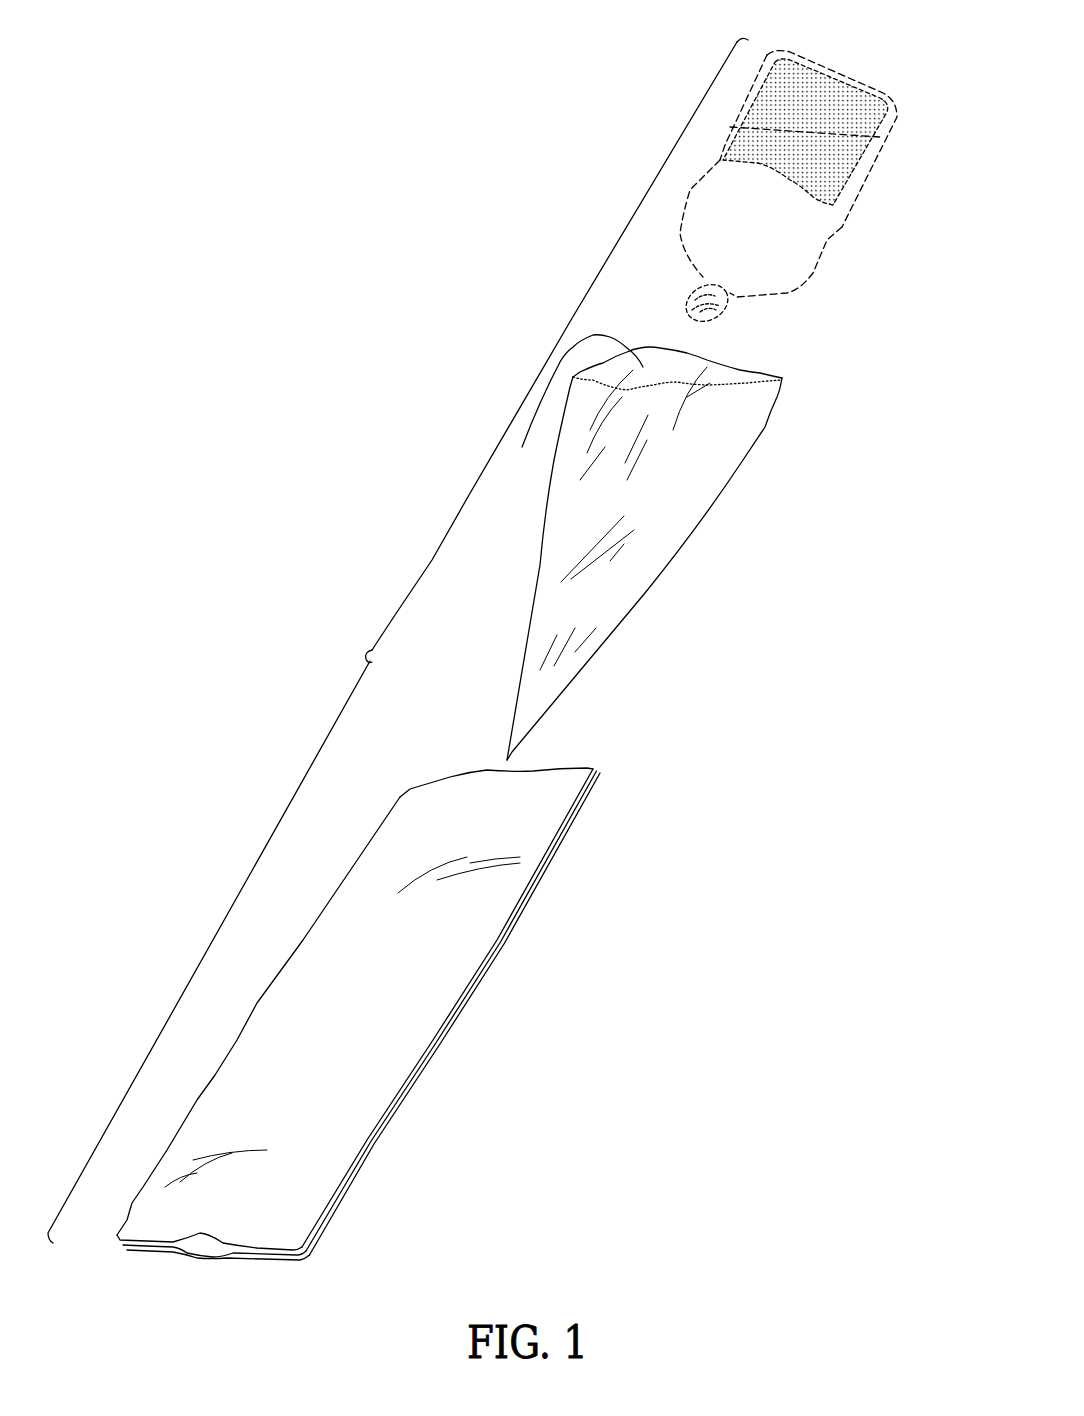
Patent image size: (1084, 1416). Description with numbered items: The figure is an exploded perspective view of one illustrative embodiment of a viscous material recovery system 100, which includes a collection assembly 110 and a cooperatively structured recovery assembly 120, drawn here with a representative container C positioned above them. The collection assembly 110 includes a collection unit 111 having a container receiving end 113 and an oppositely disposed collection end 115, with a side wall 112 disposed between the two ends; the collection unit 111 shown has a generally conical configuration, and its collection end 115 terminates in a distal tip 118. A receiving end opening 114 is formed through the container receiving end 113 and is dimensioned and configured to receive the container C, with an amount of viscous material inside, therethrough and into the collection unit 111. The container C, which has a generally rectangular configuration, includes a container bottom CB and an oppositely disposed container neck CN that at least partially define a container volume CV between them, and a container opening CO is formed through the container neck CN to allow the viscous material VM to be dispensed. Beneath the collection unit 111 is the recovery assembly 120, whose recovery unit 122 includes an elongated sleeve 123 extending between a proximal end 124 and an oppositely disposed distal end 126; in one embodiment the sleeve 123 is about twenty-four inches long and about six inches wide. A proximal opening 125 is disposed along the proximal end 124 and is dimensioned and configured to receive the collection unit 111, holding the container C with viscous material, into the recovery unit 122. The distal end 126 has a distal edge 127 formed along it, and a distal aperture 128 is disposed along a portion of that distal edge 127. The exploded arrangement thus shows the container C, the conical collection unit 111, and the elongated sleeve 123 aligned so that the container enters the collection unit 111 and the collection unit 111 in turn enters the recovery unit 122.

The viscous material recovery system 100 is at (343, 636).
The collection assembly 110 is at (703, 551).
The collection unit 111 is at (638, 596).
The side wall 112 is at (625, 518).
The container receiving end 113 is at (764, 432).
The receiving end opening 114 is at (574, 407).
The collection end 115 is at (540, 717).
The distal tip 118 is at (507, 755).
The recovery assembly 120 is at (480, 1020).
The recovery unit 122 is at (550, 863).
The sleeve 123 is at (342, 1022).
The proximal end 124 is at (585, 805).
The proximal opening 125 is at (488, 770).
The distal end 126 is at (318, 1226).
The distal edge 127 is at (278, 1261).
The distal aperture 128 is at (212, 1247).
The container C is at (832, 243).
The container bottom CB is at (848, 67).
The viscous material VM is at (840, 162).
The container neck CN is at (730, 300).
The container opening CO is at (690, 318).
The container volume CV is at (795, 255).